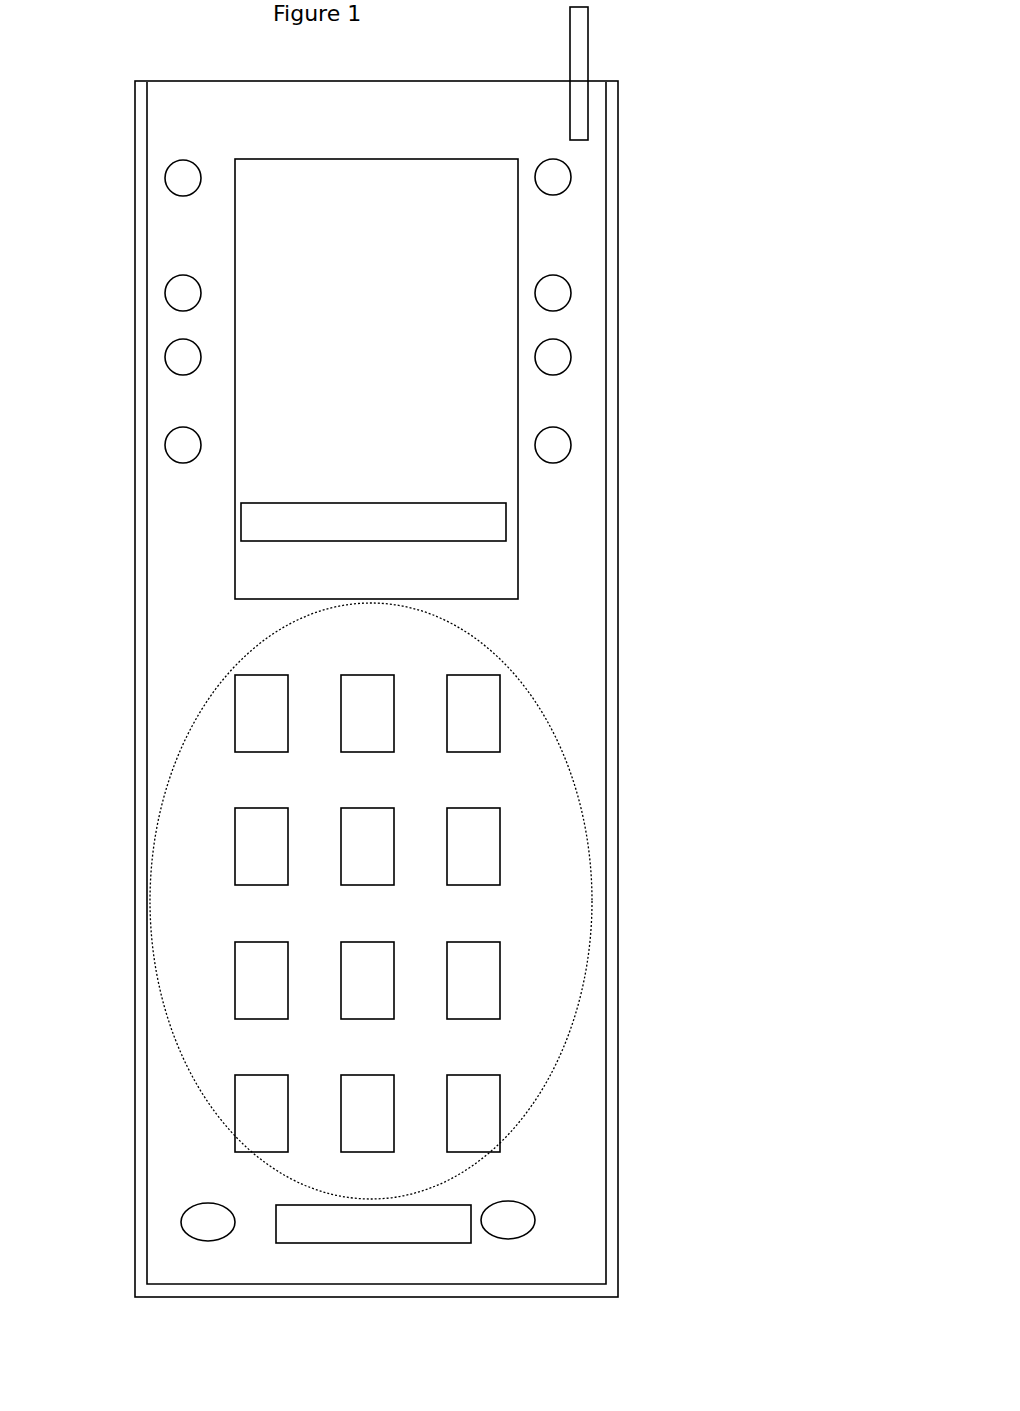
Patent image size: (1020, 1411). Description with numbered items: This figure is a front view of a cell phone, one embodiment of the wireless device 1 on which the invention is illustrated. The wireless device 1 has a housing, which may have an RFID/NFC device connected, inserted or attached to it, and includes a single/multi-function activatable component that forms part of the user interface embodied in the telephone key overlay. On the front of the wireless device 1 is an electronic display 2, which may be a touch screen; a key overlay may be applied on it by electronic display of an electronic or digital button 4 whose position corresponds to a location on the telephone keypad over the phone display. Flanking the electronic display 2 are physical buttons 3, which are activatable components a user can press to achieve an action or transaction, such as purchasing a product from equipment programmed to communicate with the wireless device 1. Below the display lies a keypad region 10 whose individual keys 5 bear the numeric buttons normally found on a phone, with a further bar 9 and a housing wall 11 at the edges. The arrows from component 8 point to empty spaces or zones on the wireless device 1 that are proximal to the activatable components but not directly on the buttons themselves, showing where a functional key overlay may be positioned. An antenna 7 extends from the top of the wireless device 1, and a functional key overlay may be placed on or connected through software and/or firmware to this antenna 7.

The wireless device 1 is at (158, 65).
The electronic display 2 is at (370, 158).
The physical buttons 3 is at (533, 198).
The electronic or digital button 4 is at (358, 503).
The keypad key 5 is at (488, 762).
The antenna 7 is at (573, 98).
The component 8 is at (548, 1152).
The bottom key / microphone bar 9 is at (297, 1203).
The keypad region 10 is at (183, 744).
The housing 11 is at (135, 303).